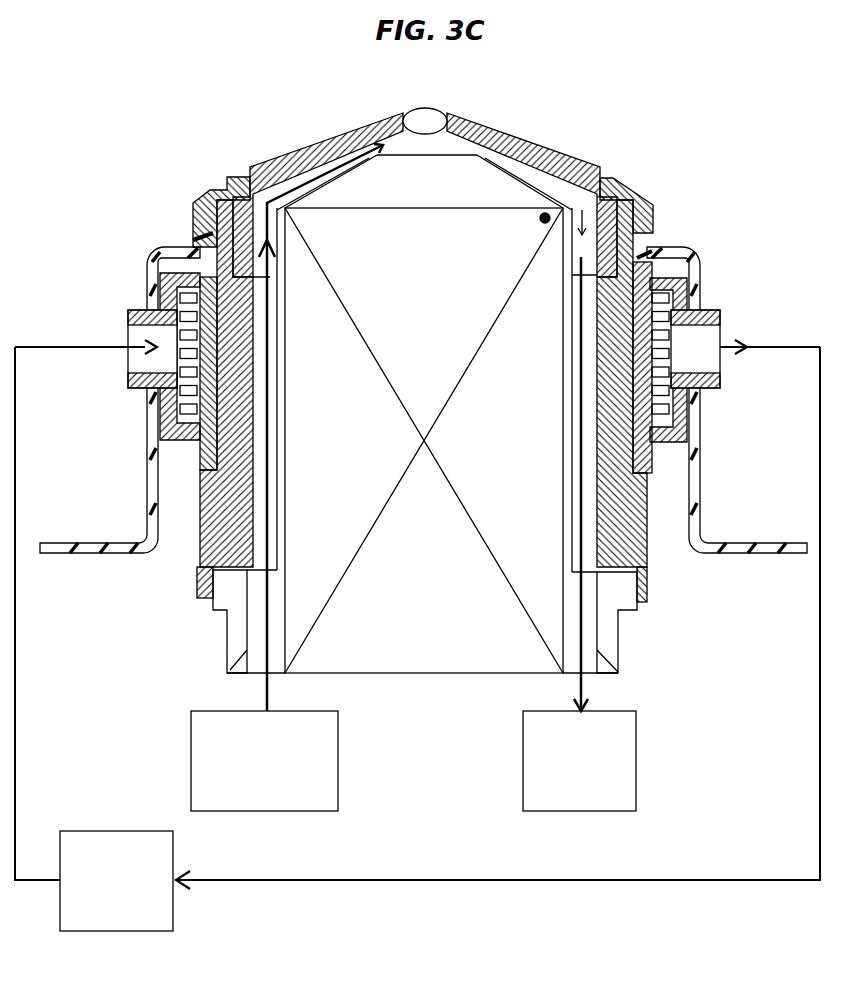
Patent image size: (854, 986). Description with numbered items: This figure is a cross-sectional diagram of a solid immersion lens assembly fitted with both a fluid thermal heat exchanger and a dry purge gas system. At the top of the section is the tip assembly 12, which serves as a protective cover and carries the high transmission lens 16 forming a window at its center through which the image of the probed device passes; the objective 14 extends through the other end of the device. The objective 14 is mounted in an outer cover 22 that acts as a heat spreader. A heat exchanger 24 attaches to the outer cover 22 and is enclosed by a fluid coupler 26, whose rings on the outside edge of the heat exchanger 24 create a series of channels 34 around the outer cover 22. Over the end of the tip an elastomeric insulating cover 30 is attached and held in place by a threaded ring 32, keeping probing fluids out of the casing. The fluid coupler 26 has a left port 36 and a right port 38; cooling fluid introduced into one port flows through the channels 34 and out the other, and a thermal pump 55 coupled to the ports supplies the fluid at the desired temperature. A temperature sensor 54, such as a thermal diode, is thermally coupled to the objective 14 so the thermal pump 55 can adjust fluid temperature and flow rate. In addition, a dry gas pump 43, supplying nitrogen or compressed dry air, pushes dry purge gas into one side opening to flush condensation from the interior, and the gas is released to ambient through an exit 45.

The tip assembly 12 is at (535, 140).
The objective 14 is at (427, 611).
The high transmission lens 16 is at (437, 107).
The outer cover 22 is at (197, 570).
The heat exchanger 24 is at (685, 432).
The fluid coupler 26 is at (688, 290).
The elastomeric insulating cover 30 is at (690, 253).
The threaded ring 32 is at (637, 192).
The channels 34 is at (185, 413).
The left port 36 is at (721, 322).
The right port 38 is at (128, 318).
The dry gas pump 43 is at (338, 780).
The exit to ambient 45 is at (636, 795).
The temperature sensor 54 is at (543, 216).
The thermal pump 55 is at (173, 914).